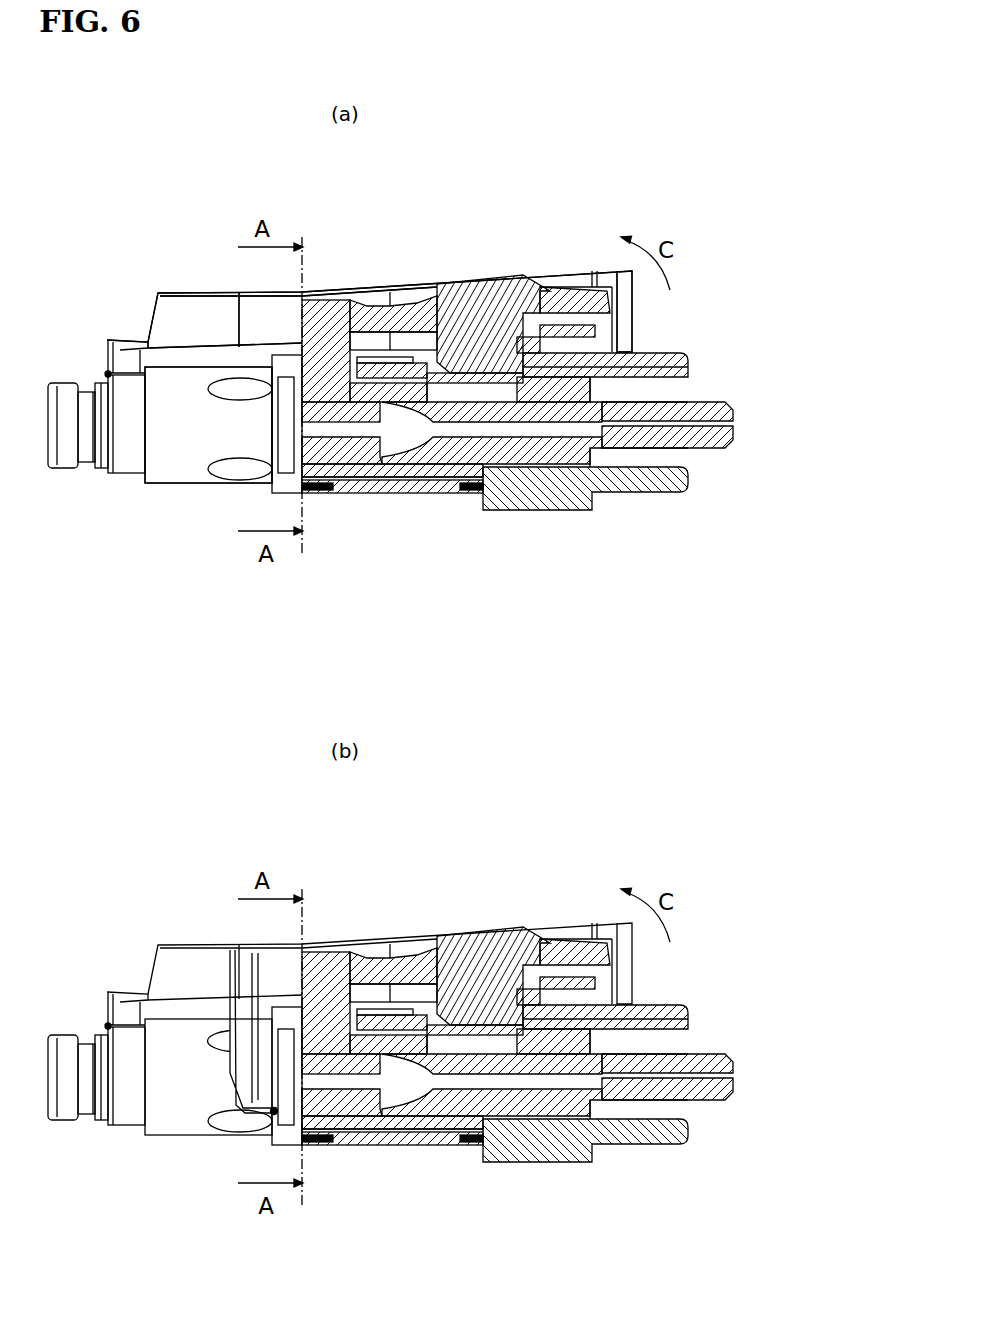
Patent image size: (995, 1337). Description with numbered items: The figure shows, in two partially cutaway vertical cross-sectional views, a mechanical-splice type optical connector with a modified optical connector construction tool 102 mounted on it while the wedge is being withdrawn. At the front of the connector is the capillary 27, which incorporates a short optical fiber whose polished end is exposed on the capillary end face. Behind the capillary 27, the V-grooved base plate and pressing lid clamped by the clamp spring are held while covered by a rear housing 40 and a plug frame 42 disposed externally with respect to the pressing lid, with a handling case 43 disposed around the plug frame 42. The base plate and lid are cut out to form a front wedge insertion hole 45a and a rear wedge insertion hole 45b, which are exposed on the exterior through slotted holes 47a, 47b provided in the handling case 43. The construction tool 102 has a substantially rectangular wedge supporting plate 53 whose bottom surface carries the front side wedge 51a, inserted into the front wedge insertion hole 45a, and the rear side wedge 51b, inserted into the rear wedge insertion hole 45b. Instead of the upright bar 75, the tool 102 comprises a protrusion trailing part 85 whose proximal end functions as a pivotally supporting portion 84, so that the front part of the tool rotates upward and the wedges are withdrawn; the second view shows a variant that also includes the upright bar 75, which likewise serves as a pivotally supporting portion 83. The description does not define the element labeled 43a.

The capillary 27 is at (720, 447).
The rear housing 40 is at (64, 472).
The plug frame 42 is at (690, 373).
The handling case 43 is at (673, 350).
The flange of insulator housing 43a is at (265, 358).
The front wedge insertion hole 45a is at (483, 370).
The rear wedge insertion hole 45b is at (340, 393).
The slotted hole 47a is at (373, 283).
The slotted hole 47b is at (517, 365).
The front side wedge 51a is at (452, 392).
The rear side wedge 51b is at (333, 418).
The wedge supporting plate 53 is at (177, 293).
The upright bar 75 is at (248, 1073).
The pivotally supporting portion 83 is at (272, 1113).
The pivotally supporting portion 84 is at (106, 372).
The protrusion trailing part 85 is at (118, 346).
The optical connector construction tool 102 is at (613, 200).